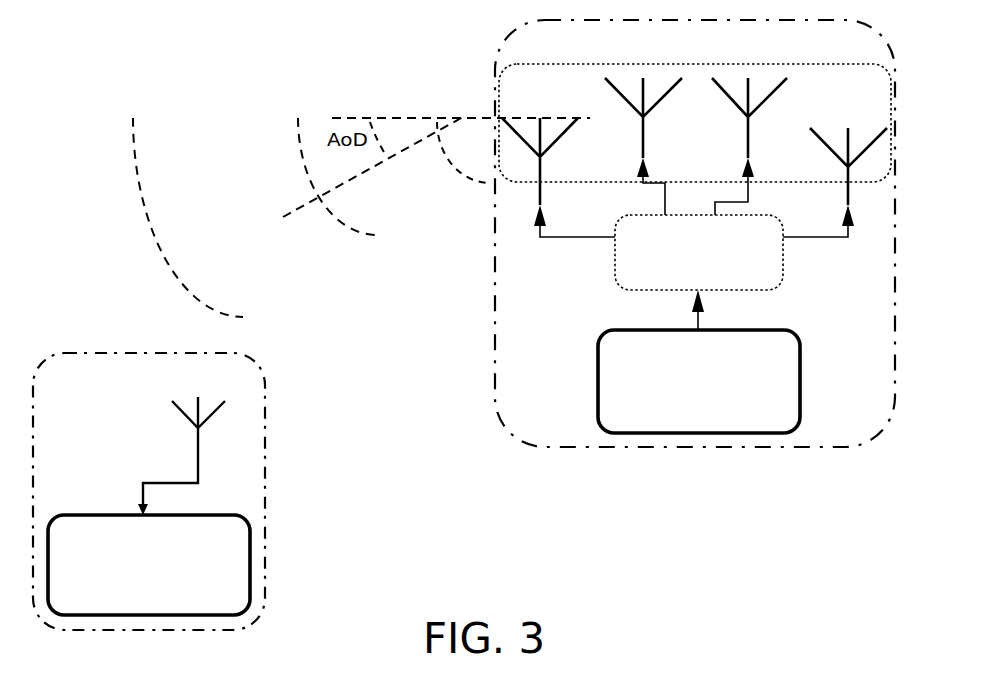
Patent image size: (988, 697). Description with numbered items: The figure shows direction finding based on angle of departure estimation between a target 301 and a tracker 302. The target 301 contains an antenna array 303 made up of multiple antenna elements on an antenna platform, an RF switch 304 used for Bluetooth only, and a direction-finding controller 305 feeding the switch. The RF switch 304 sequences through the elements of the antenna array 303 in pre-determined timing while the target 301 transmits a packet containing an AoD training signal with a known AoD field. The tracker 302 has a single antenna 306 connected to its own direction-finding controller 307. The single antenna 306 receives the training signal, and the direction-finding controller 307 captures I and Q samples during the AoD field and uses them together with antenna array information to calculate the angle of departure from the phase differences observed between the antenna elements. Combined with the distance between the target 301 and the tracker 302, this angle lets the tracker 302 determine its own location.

The target 301 is at (561, 449).
The tracker 302 is at (96, 352).
The antenna array 303 is at (848, 108).
The RF switch 304 is at (778, 240).
The direction-finding controller 305 is at (786, 331).
The single antenna 306 is at (199, 398).
The direction-finding controller 307 is at (220, 514).